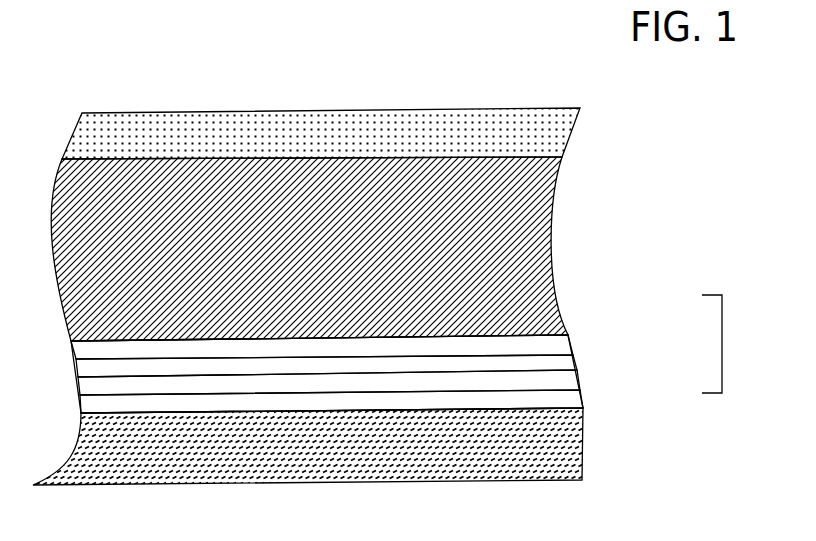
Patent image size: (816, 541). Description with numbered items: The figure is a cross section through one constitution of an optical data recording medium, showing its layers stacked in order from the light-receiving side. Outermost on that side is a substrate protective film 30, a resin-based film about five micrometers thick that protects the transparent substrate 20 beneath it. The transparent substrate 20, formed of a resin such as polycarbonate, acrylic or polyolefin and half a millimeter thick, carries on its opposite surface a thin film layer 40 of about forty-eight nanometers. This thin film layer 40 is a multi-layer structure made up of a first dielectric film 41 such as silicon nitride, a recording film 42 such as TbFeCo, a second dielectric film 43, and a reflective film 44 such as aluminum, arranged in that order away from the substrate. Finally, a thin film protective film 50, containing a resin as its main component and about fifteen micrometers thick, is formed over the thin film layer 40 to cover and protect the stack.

The substrate protective film 30 is at (576, 125).
The transparent substrate 20 is at (560, 247).
The thin film layer 40 is at (728, 332).
The first dielectric film 41 is at (582, 337).
The recording film 42 is at (583, 354).
The second dielectric film 43 is at (585, 374).
The reflective film 44 is at (590, 393).
The thin film protective film 50 is at (596, 452).